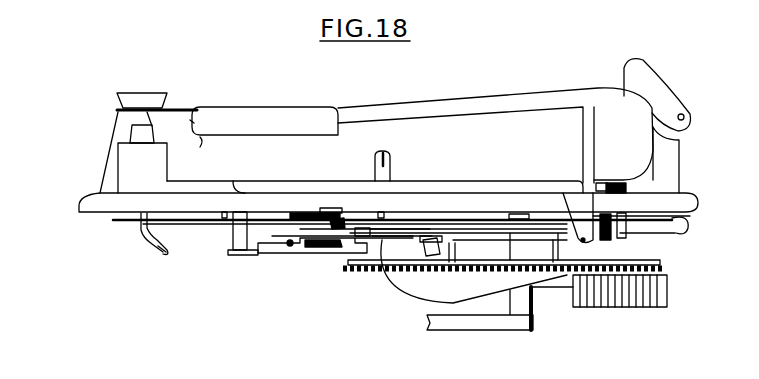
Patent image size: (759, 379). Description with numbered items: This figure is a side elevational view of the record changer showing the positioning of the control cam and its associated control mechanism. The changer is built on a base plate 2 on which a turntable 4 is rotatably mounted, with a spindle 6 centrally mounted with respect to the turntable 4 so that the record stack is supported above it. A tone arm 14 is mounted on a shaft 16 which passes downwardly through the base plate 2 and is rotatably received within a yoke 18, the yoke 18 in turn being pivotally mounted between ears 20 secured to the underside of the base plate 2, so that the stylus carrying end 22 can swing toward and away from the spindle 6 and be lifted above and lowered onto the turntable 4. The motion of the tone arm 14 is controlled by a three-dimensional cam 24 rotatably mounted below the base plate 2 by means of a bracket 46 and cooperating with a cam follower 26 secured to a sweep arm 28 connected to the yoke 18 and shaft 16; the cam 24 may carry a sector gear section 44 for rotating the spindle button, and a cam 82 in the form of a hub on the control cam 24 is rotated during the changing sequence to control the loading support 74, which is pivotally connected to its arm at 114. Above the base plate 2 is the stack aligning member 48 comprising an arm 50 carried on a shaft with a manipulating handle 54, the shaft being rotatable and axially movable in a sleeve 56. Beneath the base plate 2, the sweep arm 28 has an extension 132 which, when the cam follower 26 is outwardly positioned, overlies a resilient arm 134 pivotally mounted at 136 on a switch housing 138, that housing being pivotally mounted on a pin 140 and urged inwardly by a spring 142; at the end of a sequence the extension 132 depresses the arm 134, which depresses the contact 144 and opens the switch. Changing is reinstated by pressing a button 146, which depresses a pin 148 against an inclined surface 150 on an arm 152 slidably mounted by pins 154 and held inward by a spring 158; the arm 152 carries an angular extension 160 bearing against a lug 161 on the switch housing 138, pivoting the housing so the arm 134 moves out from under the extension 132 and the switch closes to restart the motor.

The base plate 2 is at (102, 203).
The turntable 4 is at (520, 182).
The spindle 6 is at (392, 160).
The tone arm 14 is at (522, 97).
The shaft 16 is at (578, 186).
The yoke 18 is at (612, 224).
The ears 20 is at (577, 226).
The stylus carrying end 22 is at (205, 115).
The three-dimensional cam 24 is at (408, 293).
The cam follower 26 is at (458, 253).
The sweep arm 28 is at (466, 236).
The sector gear section 44 is at (668, 291).
The bracket 46 is at (491, 320).
The stack aligning member 48 is at (186, 102).
The arm 50 is at (170, 108).
The manipulating handle 54 is at (136, 95).
The sleeve 56 is at (118, 125).
The loading support 74 is at (677, 82).
The cam 82 is at (556, 250).
The pivotal connection 114 is at (686, 116).
The extension 132 is at (436, 231).
The resilient arm 134 is at (390, 238).
The pivot 136 is at (288, 247).
The switch housing 138 is at (306, 255).
The pin 140 is at (238, 256).
The spring 142 is at (338, 218).
The contact 144 is at (313, 243).
The button 146 is at (152, 132).
The pin 148 is at (148, 226).
The inclined surface 150 is at (160, 247).
The arm 152 is at (227, 212).
The pins 154 is at (347, 212).
The spring 158 is at (320, 210).
The angular extension 160 is at (371, 229).
The lug 161 is at (357, 228).